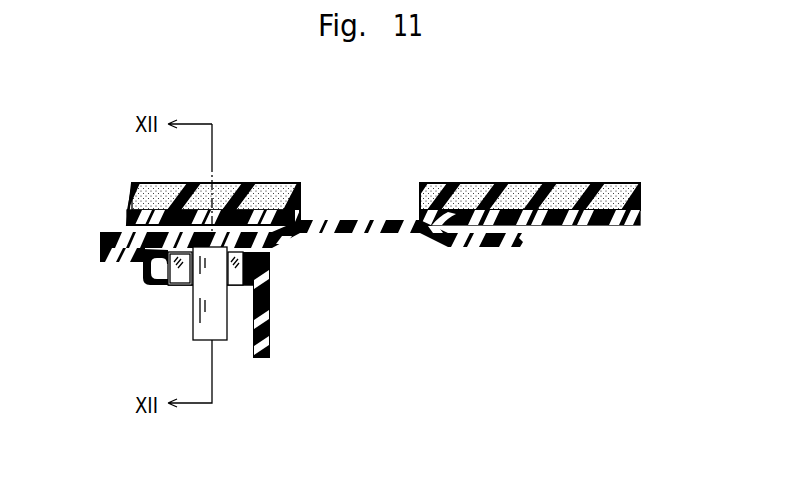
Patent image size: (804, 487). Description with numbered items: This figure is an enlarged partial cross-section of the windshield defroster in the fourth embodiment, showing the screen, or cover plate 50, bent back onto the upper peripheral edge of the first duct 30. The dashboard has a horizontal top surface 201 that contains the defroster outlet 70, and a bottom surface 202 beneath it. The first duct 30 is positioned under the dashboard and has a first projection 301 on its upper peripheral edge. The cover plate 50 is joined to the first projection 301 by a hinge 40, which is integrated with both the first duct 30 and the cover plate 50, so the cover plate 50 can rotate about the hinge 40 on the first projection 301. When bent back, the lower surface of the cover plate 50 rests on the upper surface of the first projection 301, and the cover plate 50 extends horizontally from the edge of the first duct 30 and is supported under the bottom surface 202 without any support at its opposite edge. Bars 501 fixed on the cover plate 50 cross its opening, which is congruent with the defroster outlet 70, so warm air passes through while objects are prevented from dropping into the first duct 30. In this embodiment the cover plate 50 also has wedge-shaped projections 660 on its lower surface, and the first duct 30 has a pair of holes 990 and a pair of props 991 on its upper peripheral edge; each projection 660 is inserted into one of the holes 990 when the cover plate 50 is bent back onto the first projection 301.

The hinge 40 is at (103, 246).
The first projection 301 is at (137, 262).
The first duct 30 is at (143, 277).
The prop 991 is at (180, 262).
The hole 990 is at (243, 258).
The projection 660 is at (223, 340).
The bar 501 is at (352, 222).
The defroster outlet 70 is at (418, 211).
The top surface 201 is at (585, 190).
The bottom surface 202 is at (600, 218).
The cover plate 50 is at (529, 258).